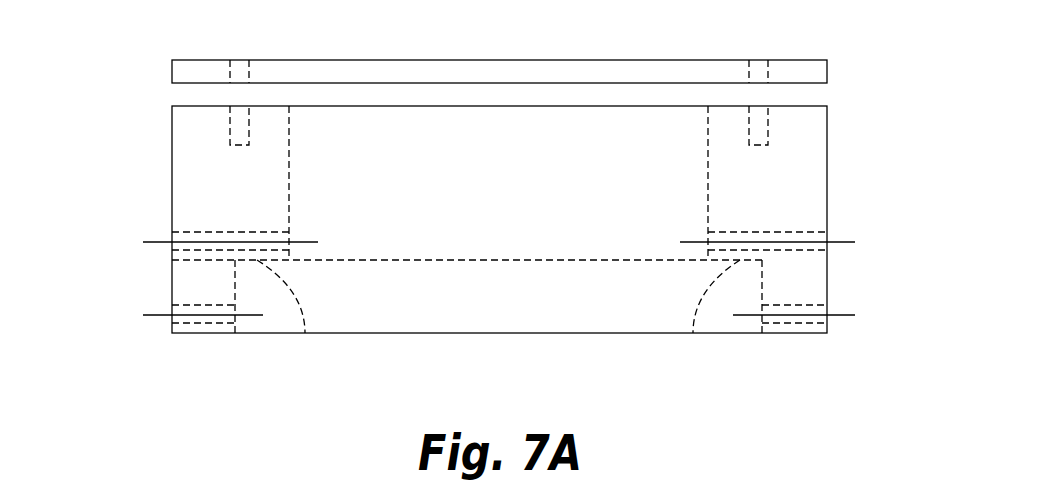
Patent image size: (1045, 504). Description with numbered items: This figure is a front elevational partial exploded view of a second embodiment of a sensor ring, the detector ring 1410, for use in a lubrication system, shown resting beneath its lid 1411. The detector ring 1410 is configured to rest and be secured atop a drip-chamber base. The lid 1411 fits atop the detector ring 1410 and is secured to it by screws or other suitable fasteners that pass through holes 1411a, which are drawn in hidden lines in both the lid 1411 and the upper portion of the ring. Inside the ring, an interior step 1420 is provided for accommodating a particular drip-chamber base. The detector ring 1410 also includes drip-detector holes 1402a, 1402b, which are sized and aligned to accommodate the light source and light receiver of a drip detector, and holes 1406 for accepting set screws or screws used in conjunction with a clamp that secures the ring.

The detector ring 1410 is at (135, 83).
The lid 1411 is at (580, 67).
The holes 1411a is at (238, 60).
The drip-detector hole 1402a is at (172, 240).
The drip-detector hole 1402b is at (826, 240).
The holes 1406 is at (207, 323).
The interior step 1420 is at (305, 333).